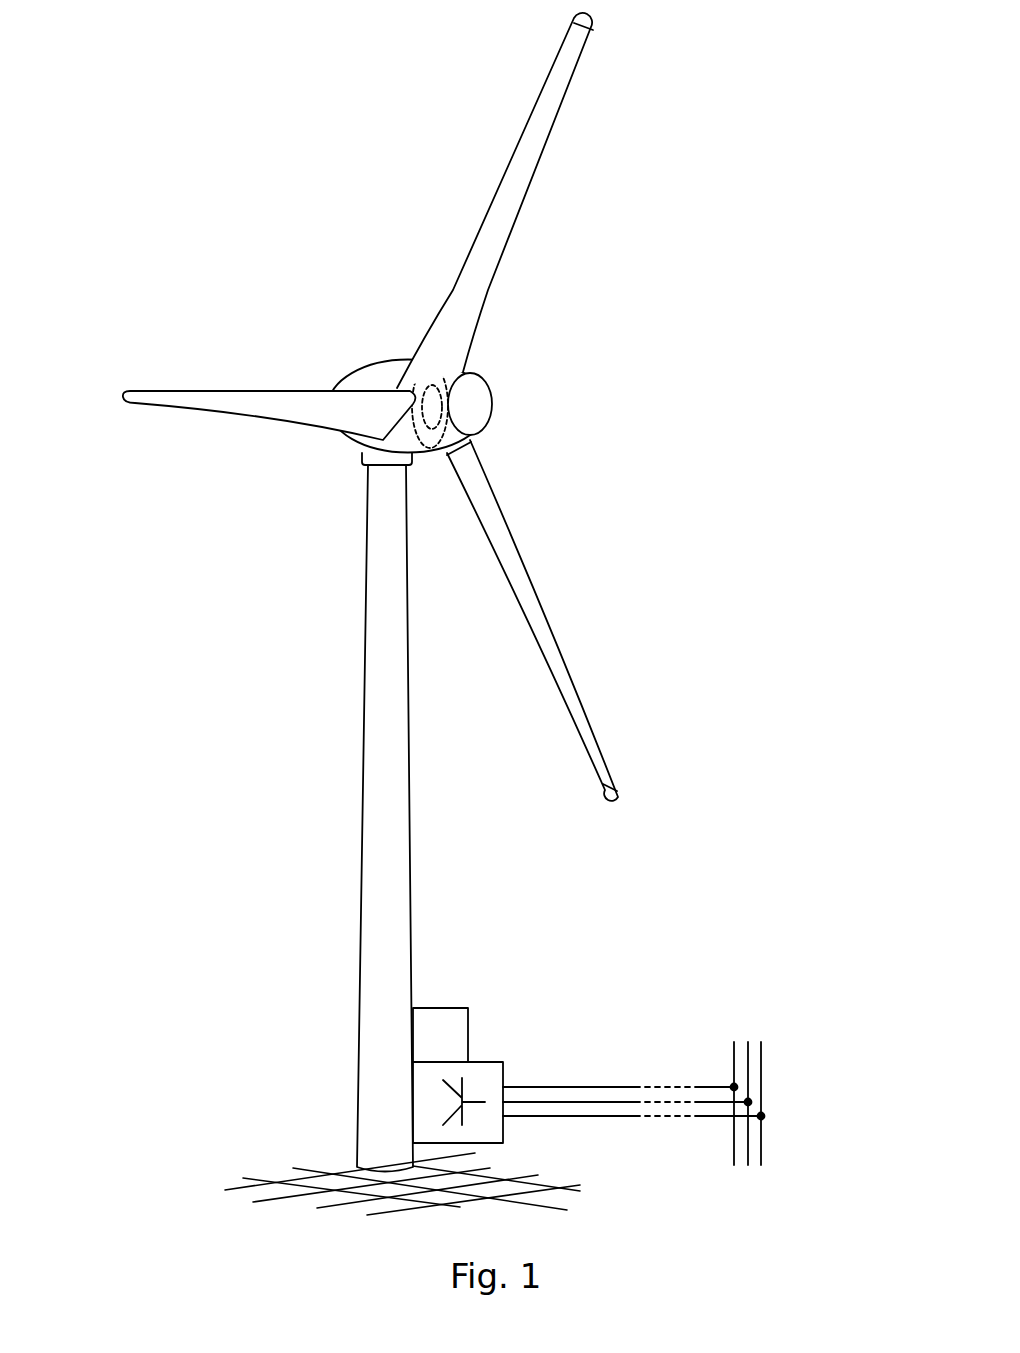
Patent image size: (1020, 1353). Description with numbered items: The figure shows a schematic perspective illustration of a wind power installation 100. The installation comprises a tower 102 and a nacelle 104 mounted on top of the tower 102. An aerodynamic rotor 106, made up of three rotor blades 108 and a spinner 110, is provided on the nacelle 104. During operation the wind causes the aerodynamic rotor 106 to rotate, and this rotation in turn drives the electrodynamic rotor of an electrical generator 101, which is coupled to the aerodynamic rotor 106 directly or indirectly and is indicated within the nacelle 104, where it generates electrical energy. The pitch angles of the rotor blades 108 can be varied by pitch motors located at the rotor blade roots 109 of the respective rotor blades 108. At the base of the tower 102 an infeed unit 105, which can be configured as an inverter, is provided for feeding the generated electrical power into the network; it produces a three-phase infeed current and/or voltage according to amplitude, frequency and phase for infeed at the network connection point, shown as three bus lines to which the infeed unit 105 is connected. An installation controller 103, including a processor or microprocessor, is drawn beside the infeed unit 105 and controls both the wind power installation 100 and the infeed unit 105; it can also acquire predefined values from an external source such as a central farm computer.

The wind power installation 100 is at (320, 537).
The electrical generator 101 is at (438, 364).
The tower 102 is at (395, 818).
The installation controller 103 is at (470, 1030).
The nacelle 104 is at (382, 380).
The infeed unit 105 is at (507, 1127).
The aerodynamic rotor 106 is at (560, 323).
The rotor blades 108 is at (212, 397).
The rotor blade roots 109 is at (473, 443).
The spinner 110 is at (472, 402).